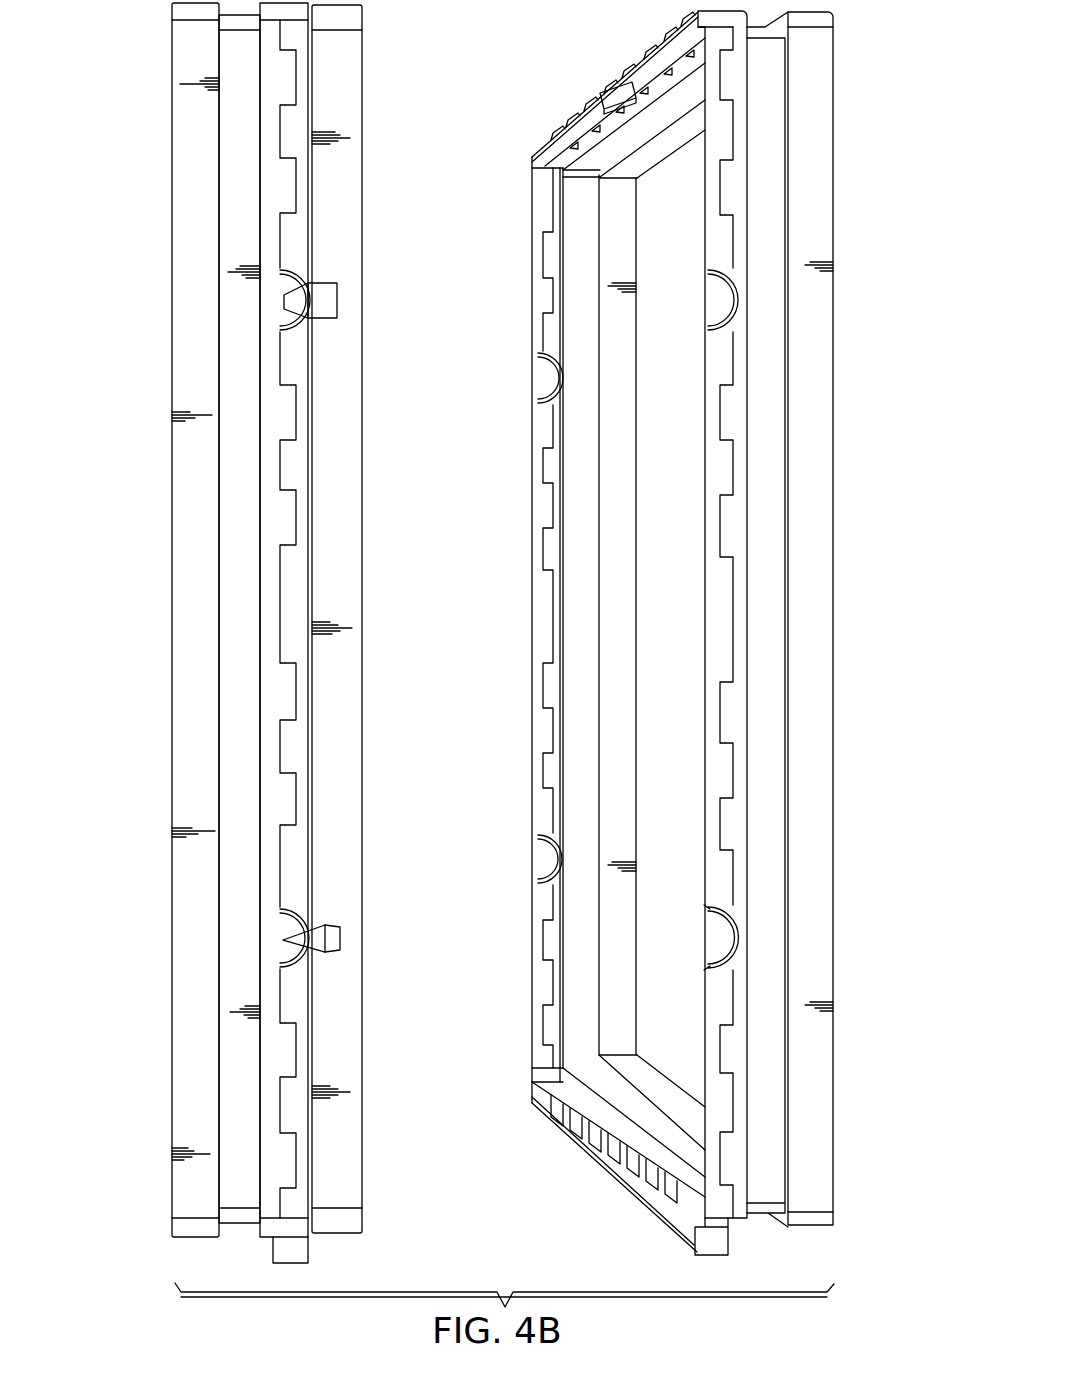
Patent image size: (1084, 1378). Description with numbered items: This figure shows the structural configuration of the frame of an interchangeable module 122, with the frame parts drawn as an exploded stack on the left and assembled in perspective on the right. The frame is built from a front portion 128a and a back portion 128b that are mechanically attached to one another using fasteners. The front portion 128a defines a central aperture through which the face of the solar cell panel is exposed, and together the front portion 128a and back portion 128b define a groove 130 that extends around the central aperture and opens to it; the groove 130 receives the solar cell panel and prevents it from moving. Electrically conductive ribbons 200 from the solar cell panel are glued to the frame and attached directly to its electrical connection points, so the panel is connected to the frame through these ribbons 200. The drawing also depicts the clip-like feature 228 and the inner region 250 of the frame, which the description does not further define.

The interchangeable module 122 is at (386, 777).
The front portion 128a is at (836, 621).
The back portion 128b is at (170, 601).
The groove 130 is at (578, 252).
The ribbons 200 is at (339, 299).
The clip 228 is at (728, 928).
The channel 250 is at (604, 404).